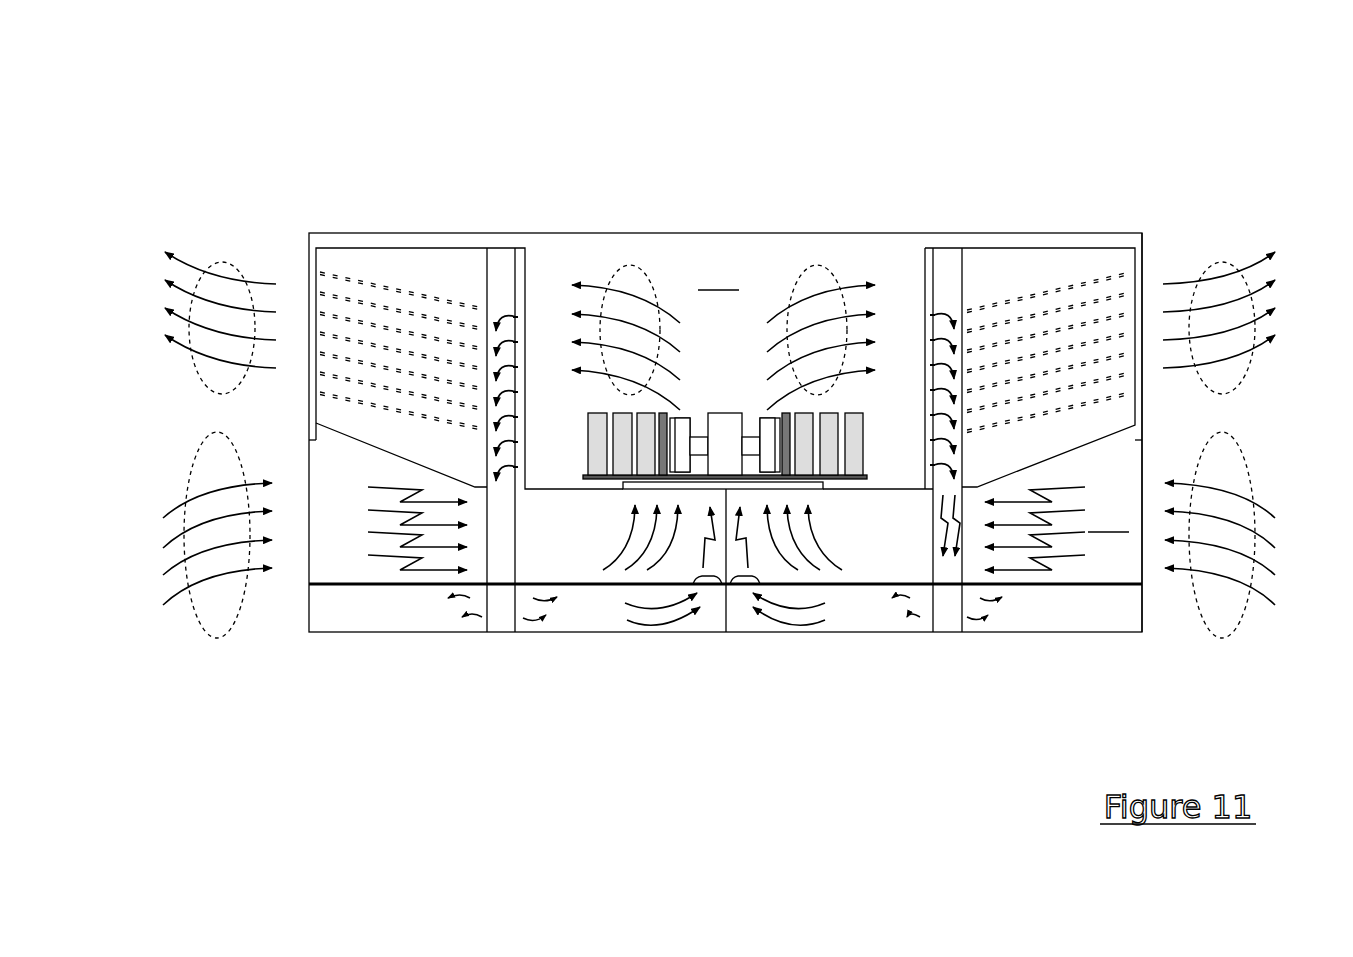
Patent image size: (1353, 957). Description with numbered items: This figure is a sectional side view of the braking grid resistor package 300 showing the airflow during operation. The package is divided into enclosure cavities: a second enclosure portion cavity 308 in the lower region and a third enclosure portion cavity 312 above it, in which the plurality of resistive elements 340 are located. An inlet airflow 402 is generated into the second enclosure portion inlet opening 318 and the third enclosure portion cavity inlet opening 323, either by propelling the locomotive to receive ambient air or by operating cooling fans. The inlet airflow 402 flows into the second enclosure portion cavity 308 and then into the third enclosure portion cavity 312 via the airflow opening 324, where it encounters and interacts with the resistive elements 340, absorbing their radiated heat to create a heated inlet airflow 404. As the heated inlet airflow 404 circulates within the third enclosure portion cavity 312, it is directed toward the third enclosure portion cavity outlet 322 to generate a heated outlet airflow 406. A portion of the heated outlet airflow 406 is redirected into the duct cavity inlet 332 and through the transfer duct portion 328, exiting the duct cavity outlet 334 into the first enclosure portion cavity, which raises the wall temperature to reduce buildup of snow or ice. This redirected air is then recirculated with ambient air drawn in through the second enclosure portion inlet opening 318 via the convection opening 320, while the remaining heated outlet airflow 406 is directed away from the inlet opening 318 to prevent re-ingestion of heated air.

The braking grid resistor package 300 is at (1148, 92).
The second enclosure portion cavity 308 is at (1108, 519).
The third enclosure portion cavity 312 is at (718, 278).
The second enclosure portion inlet opening 318 is at (1142, 572).
The convection opening 320 is at (742, 582).
The third enclosure portion cavity outlet 322 is at (1065, 255).
The third enclosure portion cavity inlet opening 323 is at (1143, 258).
The airflow opening 324 is at (624, 490).
The transfer duct portion 328 is at (502, 265).
The duct cavity inlet 332 is at (935, 318).
The duct cavity outlet 334 is at (510, 612).
The resistive elements 340 is at (587, 456).
The inlet airflow 402 is at (210, 638).
The heated inlet airflow 404 is at (630, 265).
The heated outlet airflow 406 is at (222, 262).